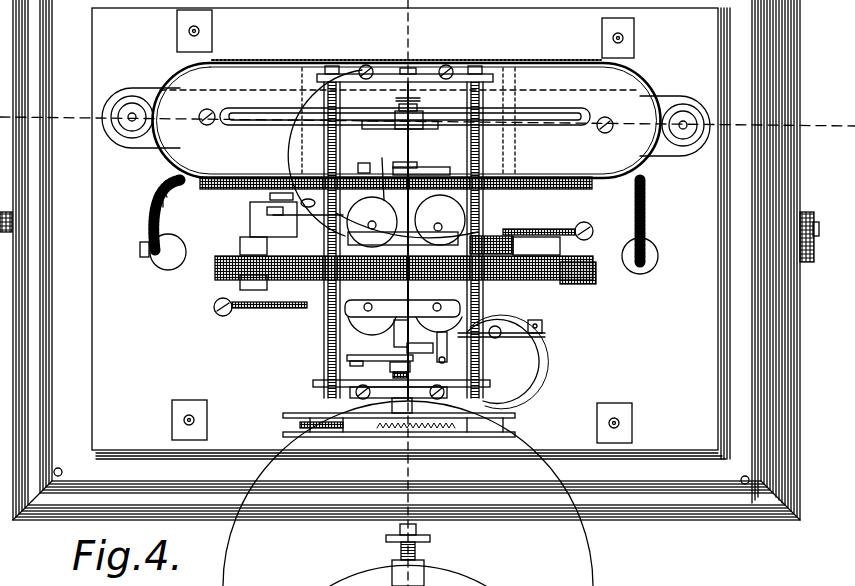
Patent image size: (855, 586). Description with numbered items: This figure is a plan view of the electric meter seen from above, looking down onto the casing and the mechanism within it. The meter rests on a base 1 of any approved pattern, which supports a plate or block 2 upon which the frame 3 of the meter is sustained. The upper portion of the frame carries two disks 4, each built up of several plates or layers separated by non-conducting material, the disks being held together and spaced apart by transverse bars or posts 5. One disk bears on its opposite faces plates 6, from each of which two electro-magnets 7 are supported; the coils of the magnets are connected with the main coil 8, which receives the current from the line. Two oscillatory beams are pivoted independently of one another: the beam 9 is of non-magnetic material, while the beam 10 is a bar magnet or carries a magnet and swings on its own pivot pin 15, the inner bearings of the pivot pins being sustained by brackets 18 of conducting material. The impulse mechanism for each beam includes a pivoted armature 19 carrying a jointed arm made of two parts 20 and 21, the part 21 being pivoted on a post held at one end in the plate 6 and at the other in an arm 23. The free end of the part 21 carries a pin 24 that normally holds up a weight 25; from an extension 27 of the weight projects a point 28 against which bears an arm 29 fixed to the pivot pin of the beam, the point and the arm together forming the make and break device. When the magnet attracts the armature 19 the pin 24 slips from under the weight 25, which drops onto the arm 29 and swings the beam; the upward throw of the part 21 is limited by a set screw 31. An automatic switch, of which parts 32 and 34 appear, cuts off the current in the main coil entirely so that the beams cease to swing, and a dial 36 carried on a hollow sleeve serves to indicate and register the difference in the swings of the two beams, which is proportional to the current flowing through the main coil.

The base 1 is at (60, 68).
The plate or block 2 is at (718, 98).
The frame 3 is at (300, 88).
The disks 4 is at (167, 270).
The transverse bars or posts 5 is at (808, 112).
The plates 6 is at (561, 281).
The electro-magnets 7 is at (440, 226).
The main coil 8 is at (543, 63).
The oscillatory beam 9 is at (405, 372).
The oscillatory beam 10 is at (418, 114).
The pivot pin 15 is at (401, 385).
The brackets 18 is at (392, 333).
The armature 19 is at (272, 221).
The arm part 20 is at (266, 210).
The arm part 21 is at (280, 198).
The arm 23 is at (507, 362).
The pin 24 is at (345, 177).
The weight 25 is at (420, 345).
The extension 27 is at (419, 252).
The point 28 is at (403, 240).
The arm 29 is at (430, 168).
The set screw 31 is at (500, 340).
The automatic switch 32 is at (556, 126).
The automatic switch 34 is at (396, 120).
The dial 36 is at (490, 440).